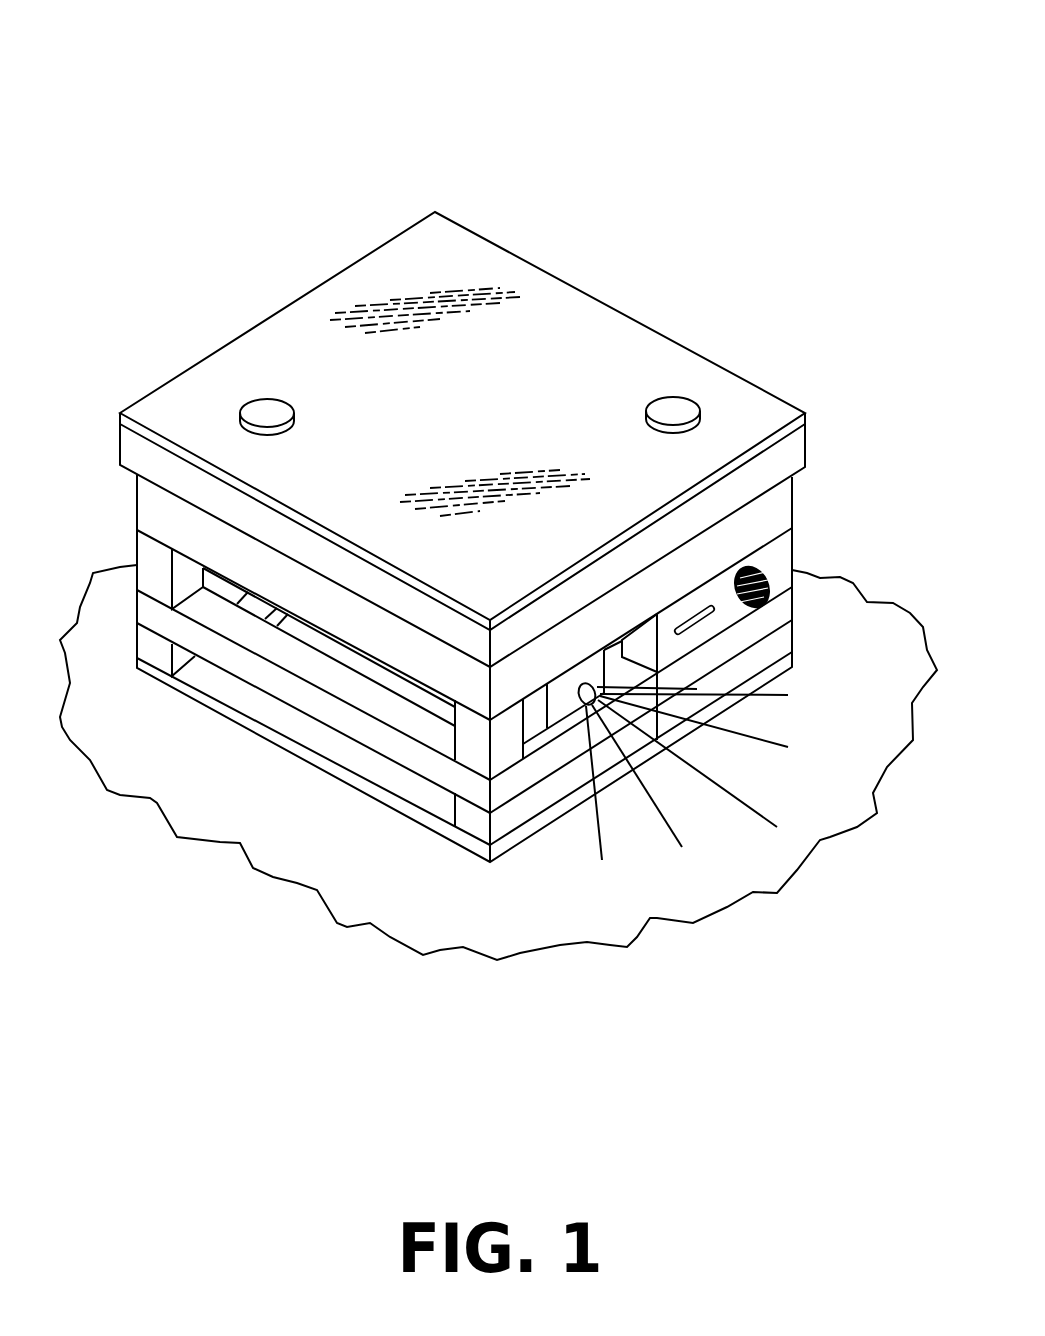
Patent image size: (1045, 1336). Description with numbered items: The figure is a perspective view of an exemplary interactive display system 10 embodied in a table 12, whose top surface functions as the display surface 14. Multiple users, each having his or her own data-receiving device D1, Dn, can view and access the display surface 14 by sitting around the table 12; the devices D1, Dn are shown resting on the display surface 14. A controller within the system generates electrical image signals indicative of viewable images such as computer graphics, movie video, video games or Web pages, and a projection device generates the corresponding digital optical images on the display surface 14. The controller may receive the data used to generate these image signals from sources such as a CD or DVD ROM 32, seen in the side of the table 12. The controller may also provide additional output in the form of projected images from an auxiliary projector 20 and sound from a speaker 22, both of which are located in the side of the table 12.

The interactive display system 10 is at (846, 124).
The table 12 is at (126, 517).
The display surface 14 is at (612, 298).
The auxiliary projector 20 is at (564, 745).
The speaker 22 is at (776, 567).
The CD or DVD ROM 32 is at (706, 630).
The data-receiving device D1 is at (264, 401).
The data-receiving device Dn is at (681, 401).